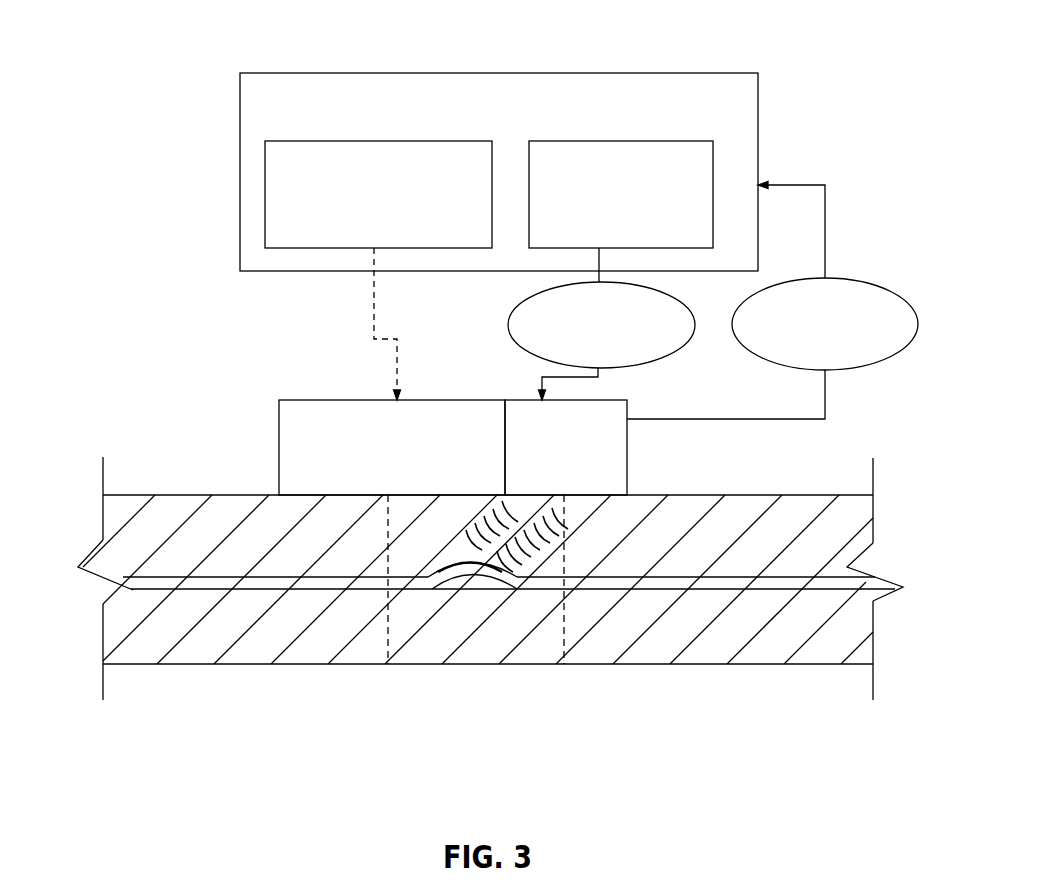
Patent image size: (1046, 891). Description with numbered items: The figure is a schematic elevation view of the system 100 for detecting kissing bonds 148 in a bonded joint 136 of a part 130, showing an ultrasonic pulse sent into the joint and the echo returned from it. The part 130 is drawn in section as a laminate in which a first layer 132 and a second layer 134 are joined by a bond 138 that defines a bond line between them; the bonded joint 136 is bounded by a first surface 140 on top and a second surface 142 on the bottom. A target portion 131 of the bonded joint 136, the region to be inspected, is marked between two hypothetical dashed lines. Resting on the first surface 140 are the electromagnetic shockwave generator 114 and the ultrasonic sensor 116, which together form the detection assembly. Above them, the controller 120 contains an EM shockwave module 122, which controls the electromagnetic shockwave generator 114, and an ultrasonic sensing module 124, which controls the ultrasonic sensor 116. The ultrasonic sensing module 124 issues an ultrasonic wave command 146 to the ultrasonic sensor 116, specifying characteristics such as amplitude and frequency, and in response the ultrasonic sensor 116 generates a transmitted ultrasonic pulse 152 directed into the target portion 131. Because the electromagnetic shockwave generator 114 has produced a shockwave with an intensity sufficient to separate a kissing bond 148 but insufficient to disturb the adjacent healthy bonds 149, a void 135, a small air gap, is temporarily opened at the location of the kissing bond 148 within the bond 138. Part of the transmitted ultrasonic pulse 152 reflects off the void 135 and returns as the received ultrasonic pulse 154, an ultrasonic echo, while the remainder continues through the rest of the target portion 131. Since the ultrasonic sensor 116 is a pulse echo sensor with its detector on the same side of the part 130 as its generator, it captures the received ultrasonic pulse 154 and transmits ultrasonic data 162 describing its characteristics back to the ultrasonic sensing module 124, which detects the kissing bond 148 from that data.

The system 100 is at (788, 53).
The controller 120 is at (549, 114).
The EM shockwave module 122 is at (390, 234).
The ultrasonic sensing module 124 is at (637, 232).
The ultrasonic wave command 146 is at (508, 305).
The ultrasonic data 162 is at (872, 287).
The electromagnetic shockwave generator 114 is at (302, 458).
The ultrasonic sensor 116 is at (600, 457).
The part 130 is at (475, 610).
The first layer 132 is at (830, 517).
The second layer 134 is at (733, 638).
The bond 138 is at (178, 587).
The first surface 140 is at (738, 495).
The second surface 142 is at (653, 665).
The bonded joint 136 is at (352, 675).
The target portion 131 is at (418, 670).
The void 135 is at (472, 585).
The kissing bond 148 is at (485, 601).
The healthy bond 149 is at (406, 600).
The transmitted ultrasonic pulse 152 is at (462, 523).
The received ultrasonic pulse 154 is at (558, 551).